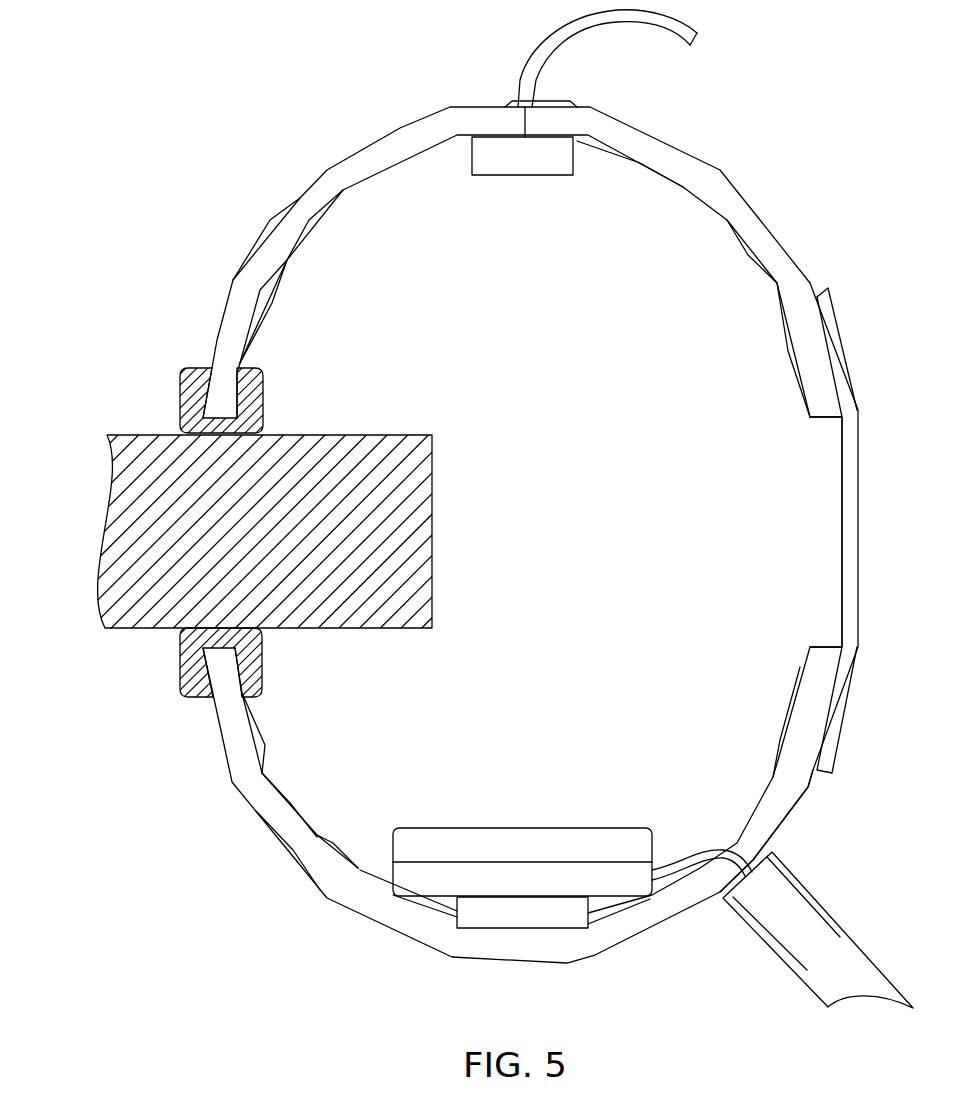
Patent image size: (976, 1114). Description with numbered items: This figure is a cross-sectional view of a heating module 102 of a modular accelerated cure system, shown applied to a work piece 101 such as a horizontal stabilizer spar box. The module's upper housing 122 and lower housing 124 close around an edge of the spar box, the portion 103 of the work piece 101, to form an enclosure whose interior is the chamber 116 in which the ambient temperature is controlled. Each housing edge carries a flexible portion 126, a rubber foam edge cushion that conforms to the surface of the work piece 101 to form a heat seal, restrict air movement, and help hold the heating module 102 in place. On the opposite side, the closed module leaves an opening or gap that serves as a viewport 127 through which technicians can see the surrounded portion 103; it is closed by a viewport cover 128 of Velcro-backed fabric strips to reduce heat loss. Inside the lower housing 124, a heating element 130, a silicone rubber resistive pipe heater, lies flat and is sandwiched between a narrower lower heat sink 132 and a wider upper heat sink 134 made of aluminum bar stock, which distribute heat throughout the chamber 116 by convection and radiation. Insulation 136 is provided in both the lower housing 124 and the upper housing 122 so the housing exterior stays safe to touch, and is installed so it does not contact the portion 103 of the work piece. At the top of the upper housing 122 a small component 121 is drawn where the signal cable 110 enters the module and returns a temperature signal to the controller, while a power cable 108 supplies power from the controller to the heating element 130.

The work piece 101 is at (105, 505).
The heating module 102 is at (202, 752).
The portion of the work piece 103 is at (432, 532).
The power cable 108 is at (825, 902).
The signal cable 110 is at (542, 42).
The chamber 116 is at (597, 367).
The electronic component 121 is at (522, 175).
The upper housing 122 is at (787, 248).
The lower housing 124 is at (793, 807).
The flexible portion 126 is at (180, 400).
The viewport 127 is at (796, 418).
The viewport cover 128 is at (858, 533).
The heating element 130 is at (482, 873).
The heat sink 132 is at (522, 928).
The heat sink 134 is at (563, 828).
The insulation 136 is at (275, 305).